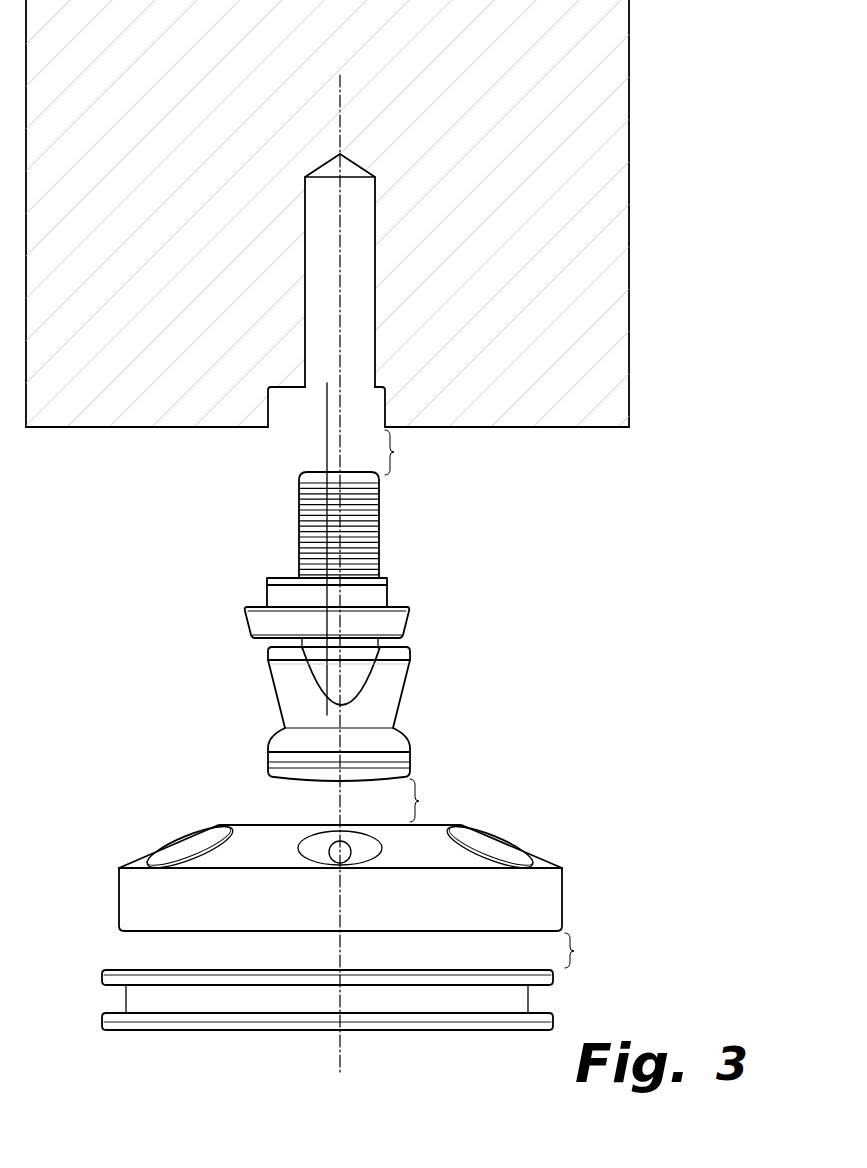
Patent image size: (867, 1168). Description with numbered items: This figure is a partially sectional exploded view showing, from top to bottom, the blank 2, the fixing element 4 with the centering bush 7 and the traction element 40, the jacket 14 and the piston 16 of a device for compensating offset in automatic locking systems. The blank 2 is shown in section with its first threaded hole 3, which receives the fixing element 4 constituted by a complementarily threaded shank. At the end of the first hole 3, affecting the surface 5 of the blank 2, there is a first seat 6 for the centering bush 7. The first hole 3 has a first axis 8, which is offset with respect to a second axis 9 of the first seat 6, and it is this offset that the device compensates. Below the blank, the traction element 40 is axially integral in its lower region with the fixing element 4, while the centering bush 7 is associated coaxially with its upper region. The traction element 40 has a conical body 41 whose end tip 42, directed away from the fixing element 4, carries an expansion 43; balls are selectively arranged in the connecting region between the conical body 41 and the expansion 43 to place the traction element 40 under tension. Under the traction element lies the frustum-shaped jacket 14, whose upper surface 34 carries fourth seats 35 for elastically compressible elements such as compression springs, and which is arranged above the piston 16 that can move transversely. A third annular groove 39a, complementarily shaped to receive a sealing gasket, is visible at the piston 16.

The blank 2 is at (634, 183).
The first threaded hole 3 is at (360, 296).
The fixing element 4 is at (366, 490).
The surface of the blank 5 is at (547, 393).
The first seat 6 is at (288, 412).
The centering bush 7 is at (355, 593).
The first axis 8 is at (340, 1062).
The second axis 9 is at (326, 600).
The frustum-shaped jacket 14 is at (388, 851).
The piston 16 is at (390, 1024).
The upper surface of the jacket 34 is at (267, 845).
The fourth seats 35 is at (181, 846).
The third annular groove 39a is at (172, 1000).
The traction element 40 is at (345, 707).
The conical body 41 is at (285, 690).
The end tip 42 is at (266, 757).
The expansion 43 is at (400, 762).